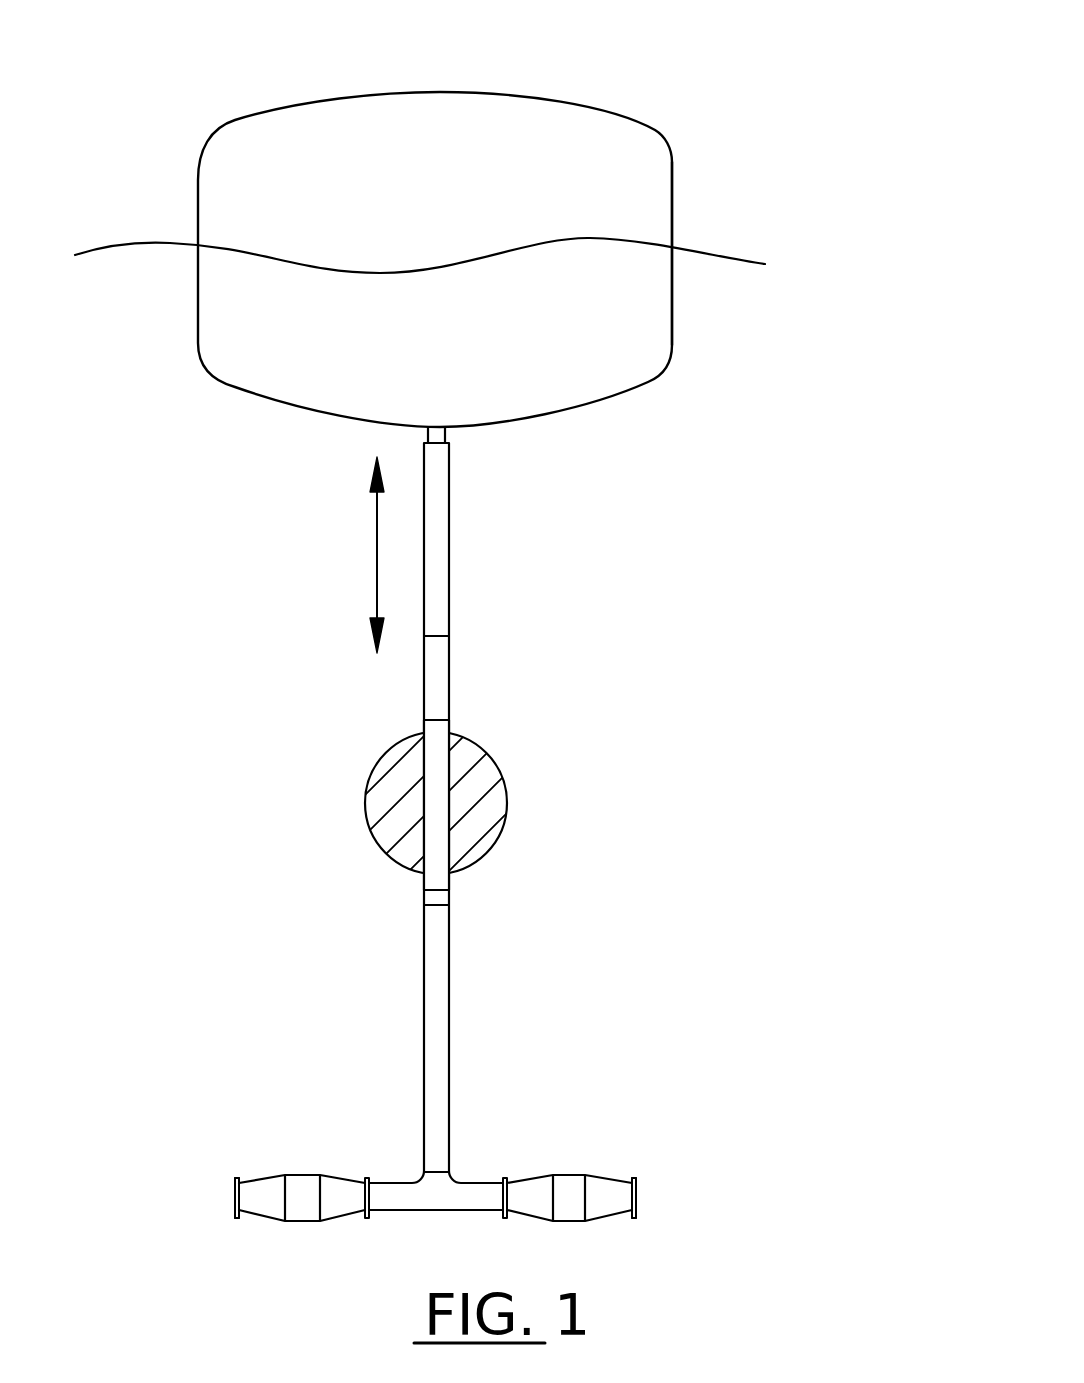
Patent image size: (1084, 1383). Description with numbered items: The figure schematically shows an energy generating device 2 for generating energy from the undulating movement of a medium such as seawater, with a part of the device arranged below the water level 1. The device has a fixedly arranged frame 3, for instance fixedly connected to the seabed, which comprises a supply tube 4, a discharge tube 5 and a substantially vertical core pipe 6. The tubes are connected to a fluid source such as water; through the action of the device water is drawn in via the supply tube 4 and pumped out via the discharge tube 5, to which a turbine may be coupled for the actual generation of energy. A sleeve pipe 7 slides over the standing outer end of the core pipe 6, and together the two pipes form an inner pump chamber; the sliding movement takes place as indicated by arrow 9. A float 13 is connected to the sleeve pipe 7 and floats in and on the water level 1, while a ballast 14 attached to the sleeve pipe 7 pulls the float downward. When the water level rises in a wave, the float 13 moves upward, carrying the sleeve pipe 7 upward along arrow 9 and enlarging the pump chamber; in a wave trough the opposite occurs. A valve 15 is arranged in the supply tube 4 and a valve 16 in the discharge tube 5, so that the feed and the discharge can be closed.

The water level 1 is at (133, 241).
The energy generating device 2 is at (595, 93).
The float 13 is at (672, 162).
The frame 3 is at (410, 1088).
The supply tube 4 is at (233, 1197).
The discharge tube 5 is at (640, 1196).
The core pipe 6 is at (440, 1012).
The sleeve pipe 7 is at (443, 556).
The arrow 9 is at (377, 553).
The ballast 14 is at (497, 778).
The valve 15 is at (302, 1186).
The valve 16 is at (568, 1190).